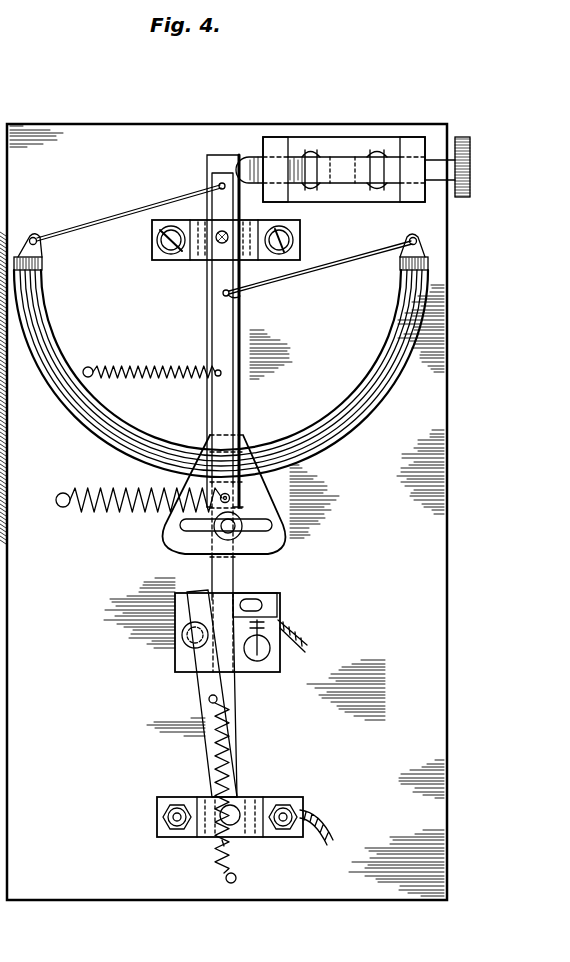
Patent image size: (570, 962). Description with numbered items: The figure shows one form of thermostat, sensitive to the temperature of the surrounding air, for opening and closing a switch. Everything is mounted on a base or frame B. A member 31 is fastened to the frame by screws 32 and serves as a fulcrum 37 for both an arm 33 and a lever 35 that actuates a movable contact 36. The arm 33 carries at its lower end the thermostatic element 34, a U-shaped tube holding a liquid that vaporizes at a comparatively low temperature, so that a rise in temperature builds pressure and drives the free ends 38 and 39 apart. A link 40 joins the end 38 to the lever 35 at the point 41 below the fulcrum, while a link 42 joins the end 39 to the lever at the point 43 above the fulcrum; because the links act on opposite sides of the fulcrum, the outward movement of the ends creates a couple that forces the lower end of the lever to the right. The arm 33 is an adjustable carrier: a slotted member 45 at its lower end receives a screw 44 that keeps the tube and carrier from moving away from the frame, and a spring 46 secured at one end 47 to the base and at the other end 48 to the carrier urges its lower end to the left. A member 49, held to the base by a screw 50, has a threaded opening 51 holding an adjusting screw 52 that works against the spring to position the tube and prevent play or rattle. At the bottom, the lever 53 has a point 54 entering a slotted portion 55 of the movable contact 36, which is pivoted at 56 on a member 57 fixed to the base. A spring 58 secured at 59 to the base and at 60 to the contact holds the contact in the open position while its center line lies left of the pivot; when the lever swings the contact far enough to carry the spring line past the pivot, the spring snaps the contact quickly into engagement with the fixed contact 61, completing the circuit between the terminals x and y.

The base or frame B is at (79, 173).
The member 31 is at (176, 262).
The screws 32 is at (158, 246).
The arm 33 is at (242, 396).
The thermostatic element 34 is at (328, 428).
The lever 35 is at (222, 333).
The movable contact 36 is at (201, 678).
The fulcrum 37 is at (219, 245).
The free end 38 is at (402, 278).
The free end 39 is at (43, 266).
The link 40 is at (326, 272).
The point 41 is at (244, 297).
The link 42 is at (116, 223).
The point 43 is at (218, 185).
The screw 44 is at (242, 524).
The slotted member 45 is at (284, 532).
The spring 46 is at (131, 512).
The end of spring 47 is at (61, 507).
The end of spring 48 is at (230, 498).
The member 49 is at (371, 145).
The screw 50 is at (384, 188).
The screw-threaded opening 51 is at (277, 156).
The adjusting screw 52 is at (336, 160).
The lever 53 is at (236, 762).
The point 54 is at (214, 770).
The slotted portion 55 is at (232, 750).
The pivotal point 56 is at (236, 821).
The member 57 is at (277, 797).
The spring 58 is at (222, 846).
The spring attachment 59 is at (237, 880).
The spring attachment 60 is at (205, 708).
The fixed contact 61 is at (270, 598).
The terminal x is at (294, 626).
The terminal y is at (316, 813).